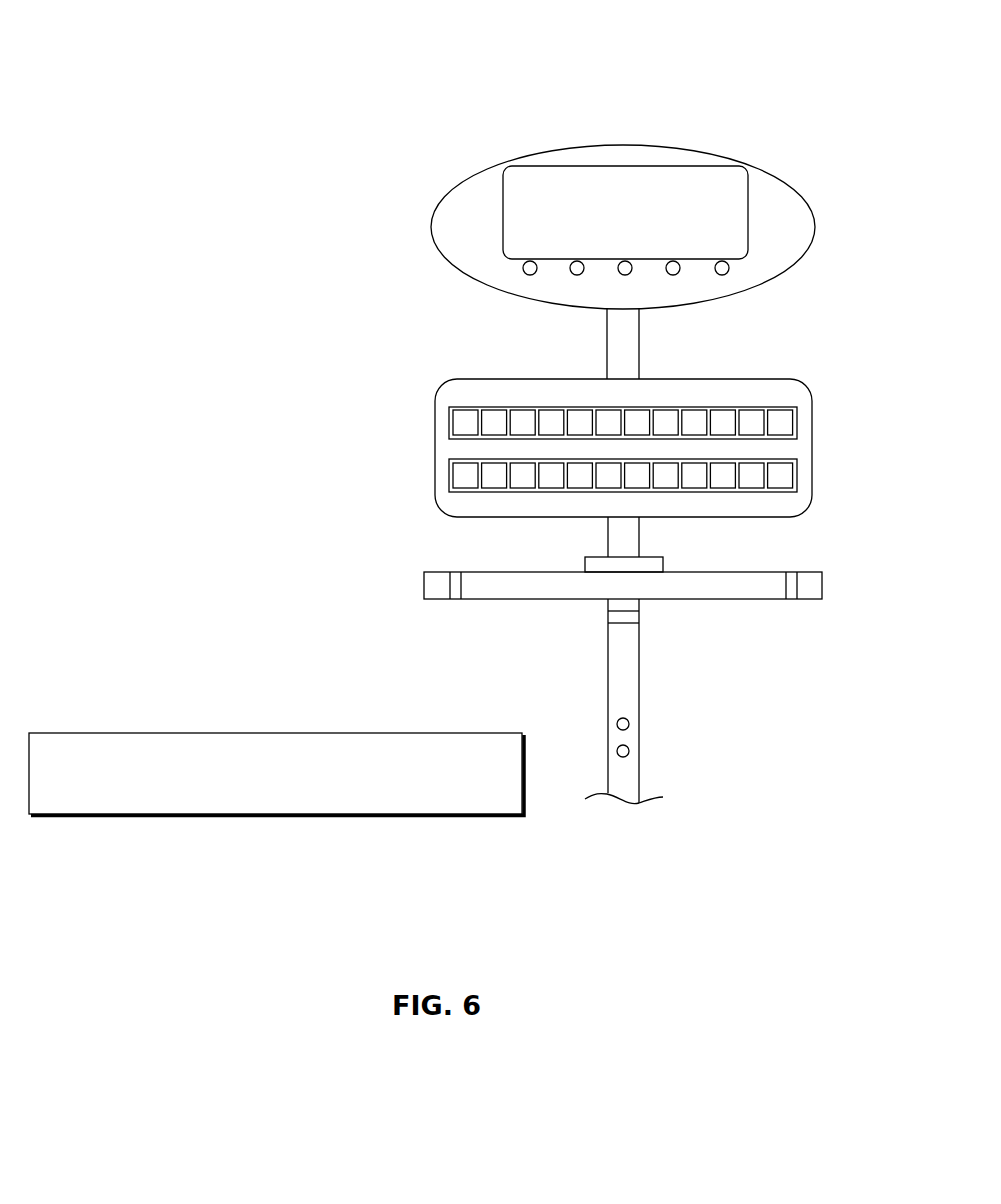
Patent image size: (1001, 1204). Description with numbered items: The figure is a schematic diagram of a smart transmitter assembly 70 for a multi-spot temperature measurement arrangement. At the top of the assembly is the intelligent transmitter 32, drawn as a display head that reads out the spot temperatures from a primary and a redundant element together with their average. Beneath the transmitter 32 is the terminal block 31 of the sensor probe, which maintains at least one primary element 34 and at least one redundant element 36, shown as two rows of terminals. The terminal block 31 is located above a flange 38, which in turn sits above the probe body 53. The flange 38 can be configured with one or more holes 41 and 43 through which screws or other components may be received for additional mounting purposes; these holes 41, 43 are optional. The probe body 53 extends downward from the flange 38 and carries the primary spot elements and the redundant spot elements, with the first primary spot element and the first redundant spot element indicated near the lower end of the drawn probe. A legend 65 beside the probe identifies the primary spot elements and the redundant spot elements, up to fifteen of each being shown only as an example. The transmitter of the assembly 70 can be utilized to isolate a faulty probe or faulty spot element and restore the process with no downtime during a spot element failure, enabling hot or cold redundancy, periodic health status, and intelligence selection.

The smart transmitter assembly 70 is at (138, 70).
The intelligent transmitter 32 is at (770, 165).
The terminal block 31 is at (418, 381).
The primary element 34 is at (787, 402).
The redundant element 36 is at (787, 457).
The flange 38 is at (807, 565).
The hole 41 is at (452, 605).
The hole 43 is at (795, 605).
The probe body 53 is at (599, 664).
The legend 65 is at (98, 730).